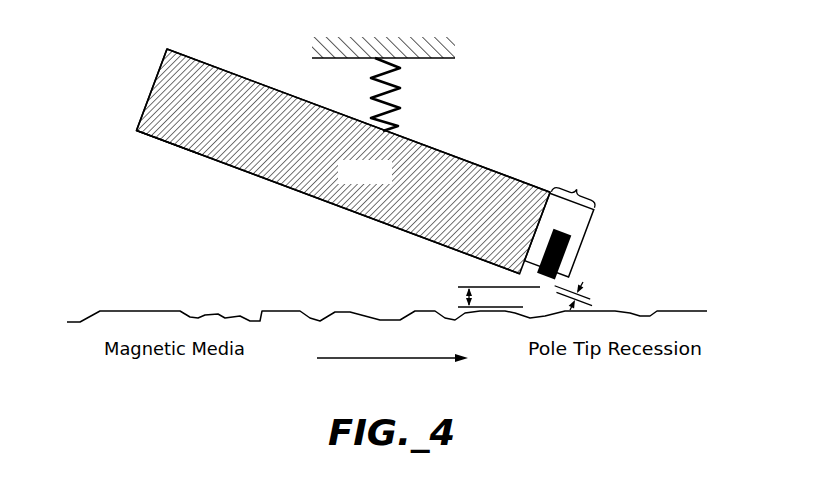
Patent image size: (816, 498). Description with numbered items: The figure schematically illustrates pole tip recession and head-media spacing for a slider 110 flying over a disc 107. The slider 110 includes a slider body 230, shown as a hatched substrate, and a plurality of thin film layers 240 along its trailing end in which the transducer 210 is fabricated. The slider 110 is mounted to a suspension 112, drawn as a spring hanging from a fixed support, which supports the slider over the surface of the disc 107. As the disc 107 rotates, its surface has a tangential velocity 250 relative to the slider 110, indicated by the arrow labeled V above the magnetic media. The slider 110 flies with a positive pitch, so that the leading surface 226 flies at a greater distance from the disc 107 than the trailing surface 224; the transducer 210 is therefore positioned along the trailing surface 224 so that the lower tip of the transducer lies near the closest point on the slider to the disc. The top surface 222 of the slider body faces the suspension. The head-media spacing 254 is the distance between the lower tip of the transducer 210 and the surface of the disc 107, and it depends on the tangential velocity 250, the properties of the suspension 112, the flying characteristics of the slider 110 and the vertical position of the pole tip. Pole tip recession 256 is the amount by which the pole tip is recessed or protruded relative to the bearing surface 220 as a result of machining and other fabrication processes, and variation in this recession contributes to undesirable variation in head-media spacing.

The disc 107 is at (157, 310).
The slider 110 is at (150, 40).
The suspension 112 is at (462, 72).
The transducer 210 is at (566, 248).
The bearing surface 220 is at (148, 135).
The top surface 222 is at (226, 68).
The trailing surface 224 is at (589, 223).
The leading surface 226 is at (146, 105).
The slider body 230 is at (222, 160).
The thin film layers 240 is at (575, 185).
The tangential velocity 250 is at (382, 359).
The head-media spacing 254 is at (466, 290).
The pole tip recession 256 is at (583, 282).